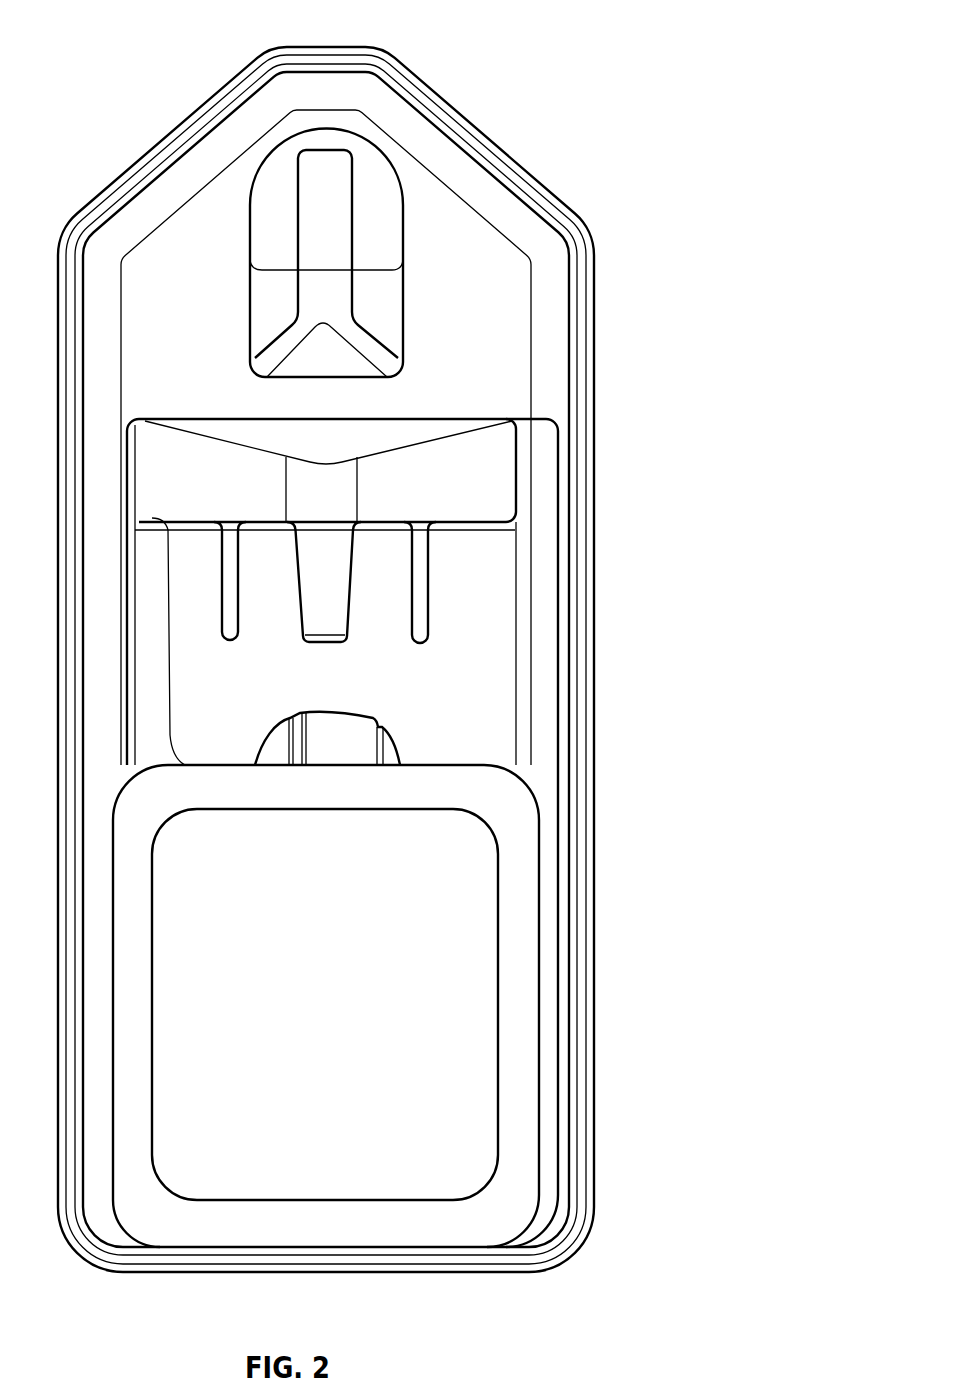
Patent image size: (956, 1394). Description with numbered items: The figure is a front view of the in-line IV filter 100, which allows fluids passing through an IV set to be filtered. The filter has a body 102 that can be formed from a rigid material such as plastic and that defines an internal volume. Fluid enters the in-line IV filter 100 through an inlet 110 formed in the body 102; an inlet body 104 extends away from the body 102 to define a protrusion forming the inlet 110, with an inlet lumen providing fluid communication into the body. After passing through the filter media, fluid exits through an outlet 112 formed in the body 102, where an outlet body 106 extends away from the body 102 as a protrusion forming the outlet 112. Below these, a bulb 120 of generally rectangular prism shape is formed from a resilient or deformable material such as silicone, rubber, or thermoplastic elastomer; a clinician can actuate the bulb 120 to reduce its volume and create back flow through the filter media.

The in-line IV filter 100 is at (560, 36).
The body 102 is at (473, 203).
The inlet body 104 is at (353, 312).
The outlet body 106 is at (357, 490).
The inlet 110 is at (352, 198).
The outlet 112 is at (335, 552).
The bulb 120 is at (470, 962).